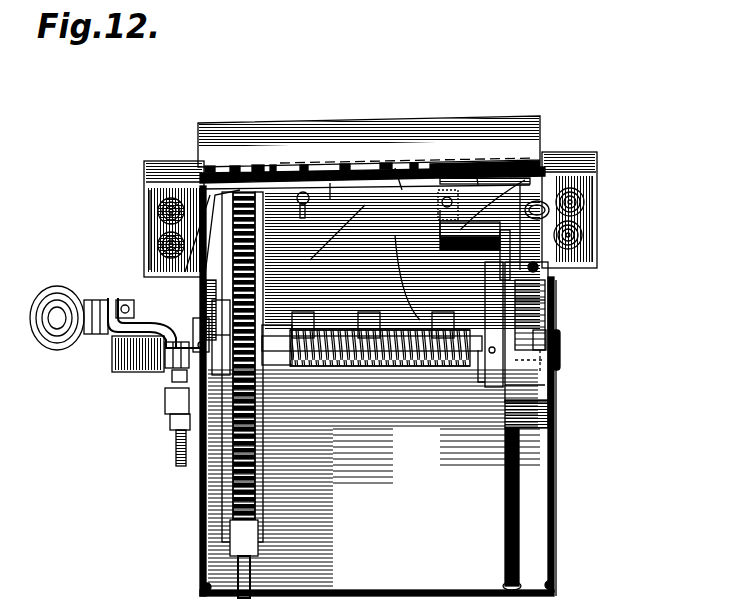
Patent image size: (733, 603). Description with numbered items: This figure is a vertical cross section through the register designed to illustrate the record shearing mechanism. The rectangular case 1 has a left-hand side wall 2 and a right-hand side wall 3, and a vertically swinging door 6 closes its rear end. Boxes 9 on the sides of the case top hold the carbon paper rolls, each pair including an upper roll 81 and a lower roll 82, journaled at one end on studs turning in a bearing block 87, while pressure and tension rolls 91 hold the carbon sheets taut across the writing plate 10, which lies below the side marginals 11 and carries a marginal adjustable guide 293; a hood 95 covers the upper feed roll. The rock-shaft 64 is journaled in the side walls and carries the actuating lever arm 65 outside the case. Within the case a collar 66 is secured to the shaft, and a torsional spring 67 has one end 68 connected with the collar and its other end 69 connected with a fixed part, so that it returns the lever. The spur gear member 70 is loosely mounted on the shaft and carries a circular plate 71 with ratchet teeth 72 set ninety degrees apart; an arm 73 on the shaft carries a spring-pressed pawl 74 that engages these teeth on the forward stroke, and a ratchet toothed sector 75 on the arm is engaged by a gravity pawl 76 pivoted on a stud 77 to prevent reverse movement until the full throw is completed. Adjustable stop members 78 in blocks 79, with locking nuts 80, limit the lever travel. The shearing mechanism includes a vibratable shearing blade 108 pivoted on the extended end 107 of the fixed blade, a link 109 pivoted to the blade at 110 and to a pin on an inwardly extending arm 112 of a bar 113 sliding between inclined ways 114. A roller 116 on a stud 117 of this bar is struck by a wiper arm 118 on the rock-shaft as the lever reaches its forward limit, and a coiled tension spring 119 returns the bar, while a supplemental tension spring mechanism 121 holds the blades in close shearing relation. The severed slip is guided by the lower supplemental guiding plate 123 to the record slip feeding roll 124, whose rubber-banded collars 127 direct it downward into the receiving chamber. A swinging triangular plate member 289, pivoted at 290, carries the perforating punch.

The rectangular case 1 is at (205, 545).
The left-hand side wall 2 is at (556, 515).
The right-hand side wall 3 is at (210, 522).
The vertically swinging door 6 is at (548, 455).
The boxes 9 is at (148, 216).
The writing plate 10 is at (345, 156).
The side marginals 11 is at (160, 174).
The rock-shaft 64 is at (178, 366).
The actuating lever arm 65 is at (126, 350).
The collar 66 is at (222, 422).
The torsional spring 67 is at (463, 368).
The spring end 68 is at (238, 542).
The spring end 69 is at (518, 388).
The spur gear member 70 is at (245, 492).
The circular plate 71 is at (195, 430).
The ratchet teeth 72 is at (235, 466).
The arm 73 is at (200, 330).
The spring-pressed pawl 74 is at (205, 305).
The ratchet toothed sector 75 is at (156, 370).
The gravity pawl 76 is at (205, 288).
The stud 77 is at (186, 268).
The adjustable stop members 78 is at (178, 382).
The blocks 79 is at (185, 398).
The locking nuts 80 is at (200, 447).
The upper roll 81 is at (157, 207).
The lower roll 82 is at (156, 242).
The bearing block 87 is at (154, 164).
The pressure and tension rolls 91 is at (228, 130).
The hood 95 is at (402, 163).
The extended end of stationary shearing blade 107 is at (598, 180).
The vibratable shearing blade 108 is at (510, 162).
The link 109 is at (452, 195).
The pivot connection 110 is at (540, 183).
The inwardly extending arm 112 is at (478, 163).
The bar 113 is at (548, 272).
The ways 114 is at (520, 370).
The roller 116 is at (545, 290).
The stud 117 is at (520, 312).
The wiper arm 118 is at (540, 330).
The coiled tension spring 119 is at (522, 490).
The supplemental tension spring mechanism 121 is at (330, 183).
The lower supplemental guiding plate 123 is at (320, 255).
The record slip feeding roll 124 is at (403, 372).
The collars 127 is at (398, 232).
The swinging triangular plate member 289 is at (302, 192).
The pivot 290 is at (262, 166).
The marginal adjustable guide 293 is at (528, 170).